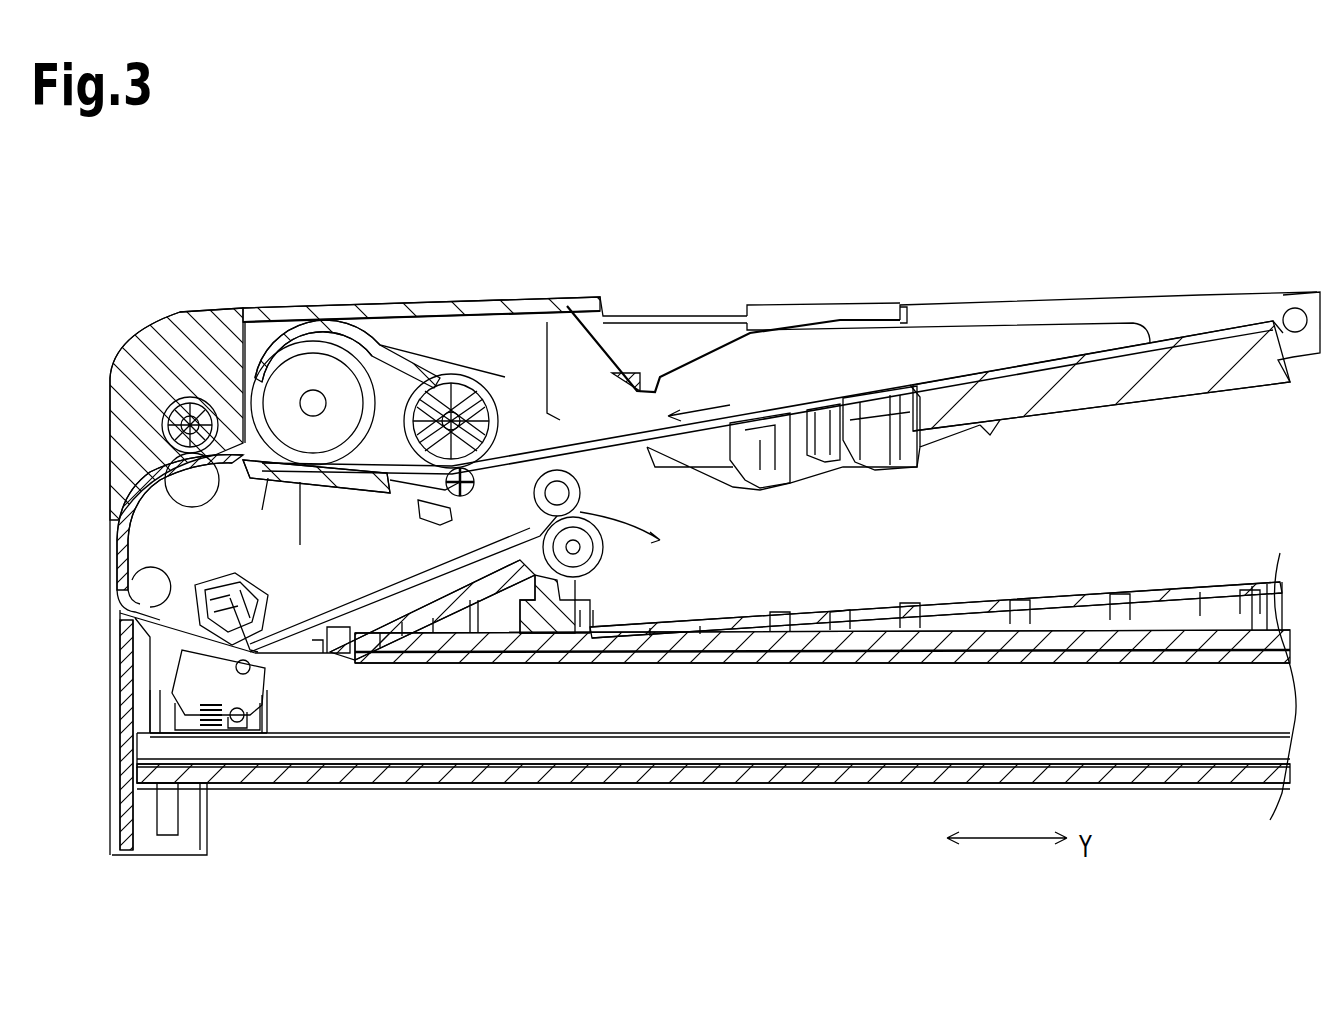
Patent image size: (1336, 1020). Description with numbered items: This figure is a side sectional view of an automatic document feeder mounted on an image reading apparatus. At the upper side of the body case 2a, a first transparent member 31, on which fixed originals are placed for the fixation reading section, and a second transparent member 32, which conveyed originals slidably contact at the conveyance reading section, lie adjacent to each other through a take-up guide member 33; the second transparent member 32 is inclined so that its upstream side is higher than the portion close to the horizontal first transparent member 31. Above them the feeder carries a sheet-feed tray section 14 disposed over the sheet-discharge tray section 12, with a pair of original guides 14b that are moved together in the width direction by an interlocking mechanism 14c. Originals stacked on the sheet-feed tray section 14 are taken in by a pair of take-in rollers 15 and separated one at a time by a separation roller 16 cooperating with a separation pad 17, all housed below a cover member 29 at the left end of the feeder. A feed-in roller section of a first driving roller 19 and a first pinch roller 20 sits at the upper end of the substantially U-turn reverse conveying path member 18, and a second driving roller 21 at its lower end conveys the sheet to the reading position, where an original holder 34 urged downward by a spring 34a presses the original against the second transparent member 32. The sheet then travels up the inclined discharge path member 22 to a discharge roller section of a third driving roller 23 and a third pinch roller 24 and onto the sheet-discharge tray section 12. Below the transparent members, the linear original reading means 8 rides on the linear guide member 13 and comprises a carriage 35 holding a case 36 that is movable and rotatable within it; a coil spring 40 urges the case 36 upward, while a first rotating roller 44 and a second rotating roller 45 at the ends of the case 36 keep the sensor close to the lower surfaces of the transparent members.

The body case 2a is at (815, 786).
The linear original reading means 8 is at (256, 793).
The sheet-discharge tray section 12 is at (1093, 596).
The linear guide member 13 is at (570, 762).
The sheet-feed tray section 14 is at (1187, 325).
The original guides 14b is at (965, 357).
The interlocking mechanism 14c is at (918, 460).
The take-in rollers 15 is at (496, 380).
The separation roller 16 is at (352, 372).
The separation pad 17 is at (334, 492).
The reverse conveying path member 18 is at (137, 504).
The first driving roller 19 is at (193, 483).
The first pinch roller 20 is at (202, 397).
The second driving roller 21 is at (163, 572).
The discharge path member 22 is at (490, 562).
The third driving roller 23 is at (562, 494).
The third pinch roller 24 is at (584, 554).
The cover member 29 is at (478, 300).
The first transparent member 31 is at (843, 660).
The second transparent member 32 is at (148, 644).
The take-up guide member 33 is at (293, 648).
The original holder 34 is at (272, 594).
The spring 34a is at (243, 597).
The carriage 35 is at (267, 723).
The case 36 is at (250, 737).
The coil spring 40 is at (241, 779).
The first rotating roller 44 is at (168, 682).
The second rotating roller 45 is at (248, 672).